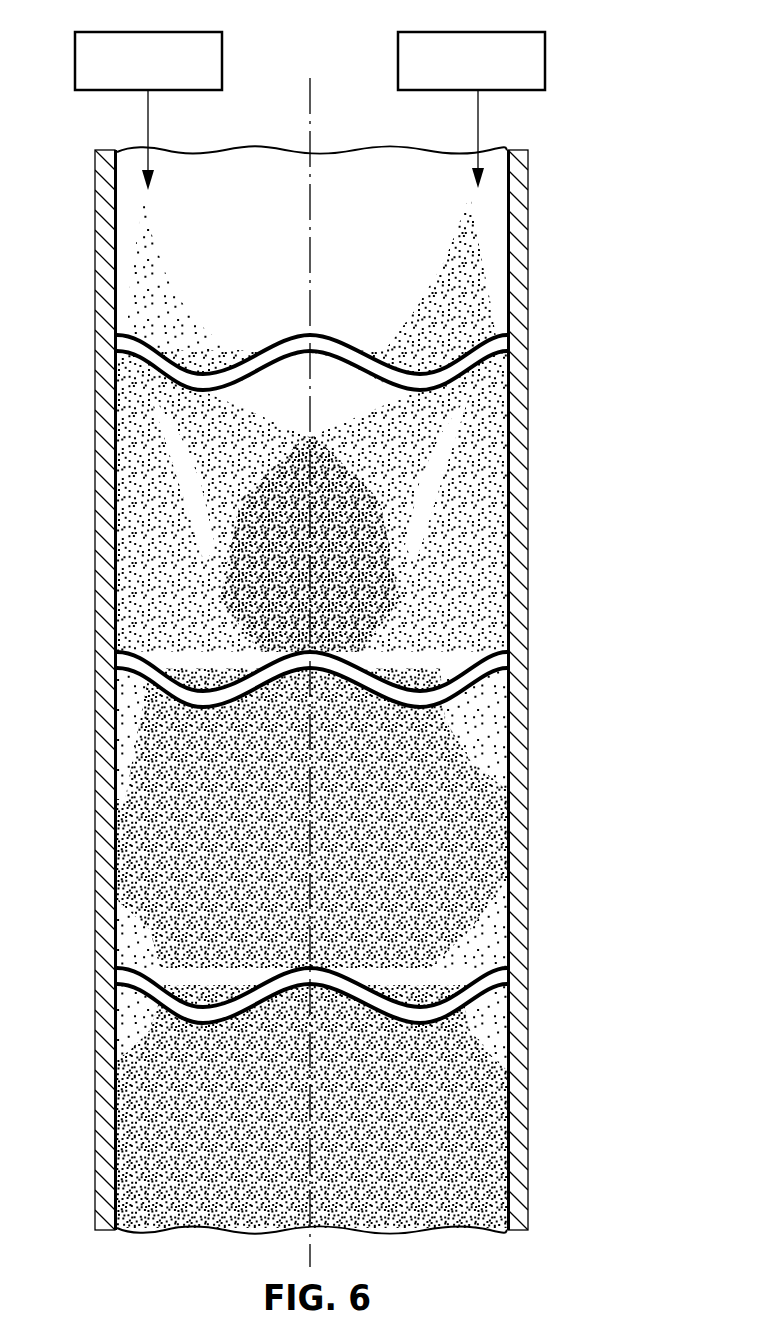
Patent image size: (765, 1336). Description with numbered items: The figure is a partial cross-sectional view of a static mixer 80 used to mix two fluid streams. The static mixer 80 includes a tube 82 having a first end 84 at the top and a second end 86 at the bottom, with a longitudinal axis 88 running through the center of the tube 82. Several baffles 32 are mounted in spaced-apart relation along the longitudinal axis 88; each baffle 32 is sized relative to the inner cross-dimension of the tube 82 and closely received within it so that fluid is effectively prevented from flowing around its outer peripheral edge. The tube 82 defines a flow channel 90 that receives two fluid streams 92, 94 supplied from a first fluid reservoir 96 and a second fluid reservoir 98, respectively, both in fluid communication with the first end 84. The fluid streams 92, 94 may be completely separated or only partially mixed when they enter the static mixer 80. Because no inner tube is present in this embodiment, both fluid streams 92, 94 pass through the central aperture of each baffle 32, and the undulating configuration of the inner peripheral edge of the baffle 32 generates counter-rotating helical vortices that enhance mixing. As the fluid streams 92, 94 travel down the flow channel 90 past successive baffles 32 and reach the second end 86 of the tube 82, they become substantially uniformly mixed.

The baffle 32 is at (149, 340).
The static mixer 80 is at (634, 182).
The tube 82 is at (91, 268).
The first end 84 is at (528, 182).
The second end 86 is at (95, 1213).
The longitudinal axis 88 is at (313, 96).
The flow channel 90 is at (115, 552).
The first fluid stream 92 is at (167, 288).
The second fluid stream 94 is at (445, 275).
The first fluid reservoir 96 is at (160, 32).
The second fluid reservoir 98 is at (486, 32).